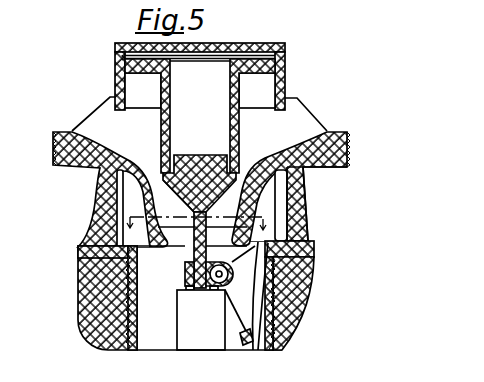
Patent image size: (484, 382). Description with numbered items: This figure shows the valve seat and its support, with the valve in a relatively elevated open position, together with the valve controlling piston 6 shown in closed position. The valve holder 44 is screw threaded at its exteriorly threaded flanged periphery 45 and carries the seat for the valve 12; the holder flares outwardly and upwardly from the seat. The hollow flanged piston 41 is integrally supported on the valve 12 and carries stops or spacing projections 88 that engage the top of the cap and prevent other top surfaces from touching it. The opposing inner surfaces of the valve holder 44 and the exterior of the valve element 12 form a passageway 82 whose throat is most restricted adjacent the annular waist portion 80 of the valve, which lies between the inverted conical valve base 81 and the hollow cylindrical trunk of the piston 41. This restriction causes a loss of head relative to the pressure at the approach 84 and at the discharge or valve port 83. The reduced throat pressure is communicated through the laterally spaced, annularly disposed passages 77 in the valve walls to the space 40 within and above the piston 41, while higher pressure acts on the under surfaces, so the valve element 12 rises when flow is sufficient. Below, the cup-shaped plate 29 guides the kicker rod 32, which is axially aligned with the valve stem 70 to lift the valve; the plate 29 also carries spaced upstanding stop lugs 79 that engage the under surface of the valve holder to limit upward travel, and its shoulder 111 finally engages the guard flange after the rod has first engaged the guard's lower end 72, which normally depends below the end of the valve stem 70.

The space 40 is at (191, 68).
The piston 41 is at (258, 72).
The stops 88 is at (122, 57).
The passages 77 is at (177, 154).
The valve 12 is at (227, 154).
The inverted conical valve base 81 is at (178, 192).
The passageway 82 is at (147, 165).
The annular waist portion 80 is at (240, 173).
The approach 84 is at (306, 111).
The threaded portion 45 is at (348, 148).
The valve holder 44 is at (324, 168).
The stop lugs 79 is at (305, 205).
The valve stem 70 is at (206, 236).
The valve port 83 is at (170, 250).
The plate 29 is at (128, 262).
The kicker rod 32 is at (200, 336).
The shoulder 111 is at (309, 244).
The lower end 72 is at (250, 343).
The piston 6 is at (195, 213).